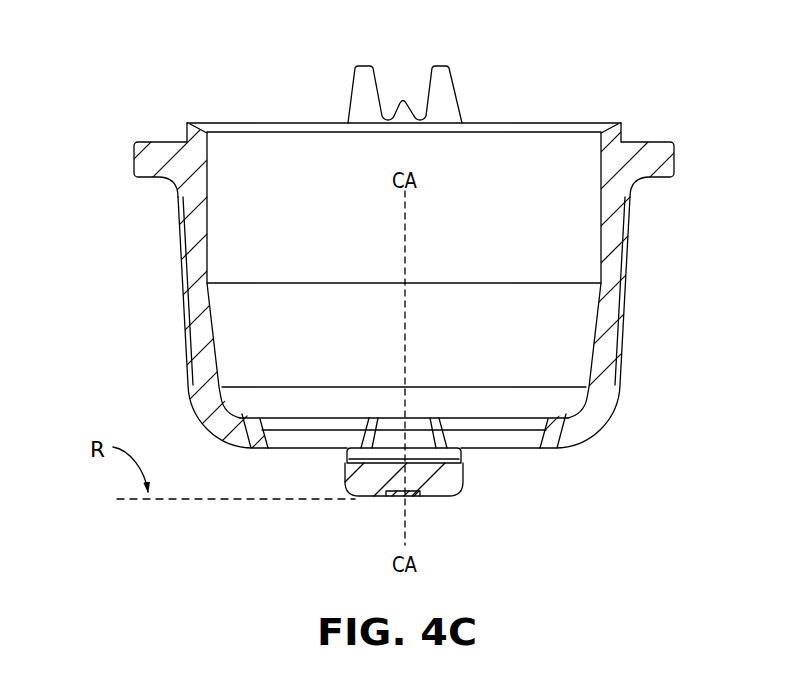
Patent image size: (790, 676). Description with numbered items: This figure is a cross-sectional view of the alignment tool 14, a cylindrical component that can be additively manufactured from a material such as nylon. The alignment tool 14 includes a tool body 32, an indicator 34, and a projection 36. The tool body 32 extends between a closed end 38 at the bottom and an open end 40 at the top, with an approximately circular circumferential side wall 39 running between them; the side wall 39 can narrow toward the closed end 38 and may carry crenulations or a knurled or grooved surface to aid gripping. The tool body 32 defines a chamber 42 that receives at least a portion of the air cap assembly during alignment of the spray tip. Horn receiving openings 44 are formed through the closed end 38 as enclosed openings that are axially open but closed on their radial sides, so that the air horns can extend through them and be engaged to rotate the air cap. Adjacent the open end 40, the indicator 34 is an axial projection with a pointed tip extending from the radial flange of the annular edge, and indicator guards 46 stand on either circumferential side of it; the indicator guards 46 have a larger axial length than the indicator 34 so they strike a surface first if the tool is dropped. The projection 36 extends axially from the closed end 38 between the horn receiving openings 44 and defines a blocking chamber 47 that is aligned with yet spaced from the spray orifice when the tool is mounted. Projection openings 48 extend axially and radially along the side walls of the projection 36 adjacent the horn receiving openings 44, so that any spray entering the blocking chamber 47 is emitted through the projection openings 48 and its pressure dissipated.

The alignment tool 14 is at (542, 95).
The tool body 32 is at (165, 295).
The indicator 34 is at (401, 96).
The projection 36 is at (380, 501).
The closed end 38 is at (622, 425).
The side wall 39 is at (624, 348).
The open end 40 is at (245, 88).
The chamber 42 is at (571, 260).
The horn receiving openings 44 is at (295, 439).
The indicator guards 46 is at (346, 102).
The blocking chamber 47 is at (418, 457).
The projection openings 48 is at (338, 456).